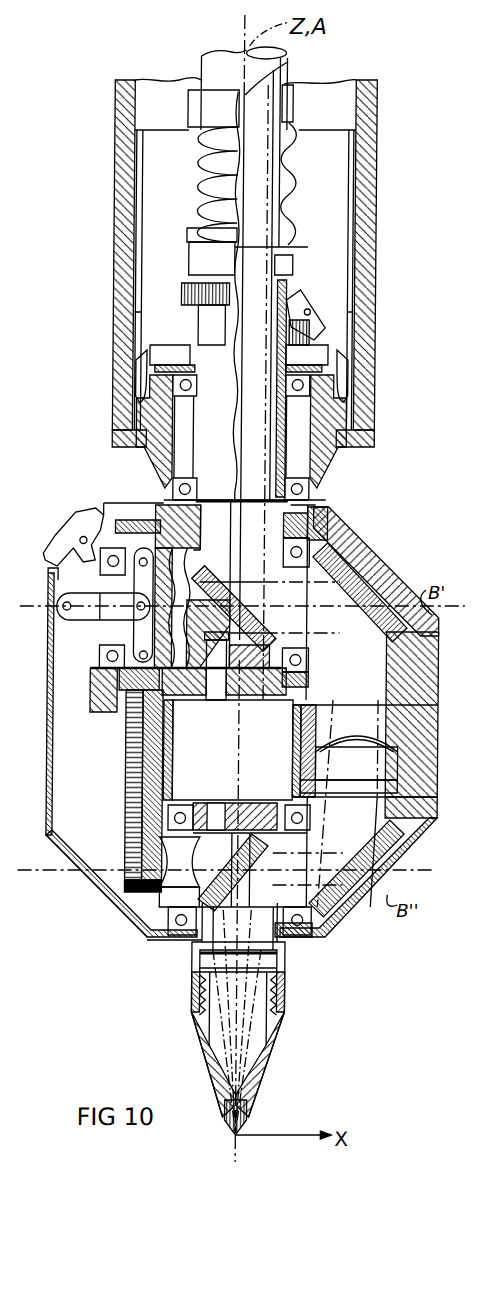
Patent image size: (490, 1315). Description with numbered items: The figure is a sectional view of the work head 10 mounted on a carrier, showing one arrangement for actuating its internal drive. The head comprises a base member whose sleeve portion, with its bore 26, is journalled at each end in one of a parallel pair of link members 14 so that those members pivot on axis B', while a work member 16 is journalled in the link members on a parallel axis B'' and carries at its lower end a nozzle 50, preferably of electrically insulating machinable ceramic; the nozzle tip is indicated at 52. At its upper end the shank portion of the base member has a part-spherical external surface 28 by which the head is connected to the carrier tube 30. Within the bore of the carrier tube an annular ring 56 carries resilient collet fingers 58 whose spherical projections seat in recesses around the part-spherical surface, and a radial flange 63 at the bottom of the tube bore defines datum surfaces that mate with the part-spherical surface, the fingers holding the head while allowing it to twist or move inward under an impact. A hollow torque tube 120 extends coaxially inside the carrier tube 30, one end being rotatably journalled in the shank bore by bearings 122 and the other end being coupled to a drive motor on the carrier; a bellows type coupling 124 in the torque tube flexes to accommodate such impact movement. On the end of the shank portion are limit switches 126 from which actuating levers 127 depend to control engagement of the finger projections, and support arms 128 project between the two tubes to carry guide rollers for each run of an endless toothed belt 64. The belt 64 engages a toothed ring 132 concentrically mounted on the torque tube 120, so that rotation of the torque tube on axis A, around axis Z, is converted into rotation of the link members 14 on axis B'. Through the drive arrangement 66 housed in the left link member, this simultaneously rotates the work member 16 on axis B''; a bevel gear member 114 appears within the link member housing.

The work head 10 is at (400, 530).
The link member 14 is at (430, 690).
The work member 16 is at (190, 997).
The bore of sleeve portion 26 is at (70, 645).
The part-spherical external surface 28 is at (322, 497).
The carrier tube 30 is at (372, 210).
The nozzle 50 is at (218, 1073).
The nozzle tip 52 is at (245, 1136).
The annular ring 56 is at (360, 155).
The collet fingers 58 is at (363, 313).
The radial flange 63 is at (333, 447).
The endless toothed belt 64 is at (489, 327).
The drive arrangement 66 is at (116, 770).
The bevel gear 114 is at (400, 660).
The torque tube 120 is at (212, 64).
The bearings 122 is at (196, 425).
The bellows type coupling 124 is at (192, 169).
The limit switches 126 is at (173, 348).
The actuating levers 127 is at (346, 380).
The support arms 128 is at (320, 333).
The toothed ring 132 is at (208, 282).